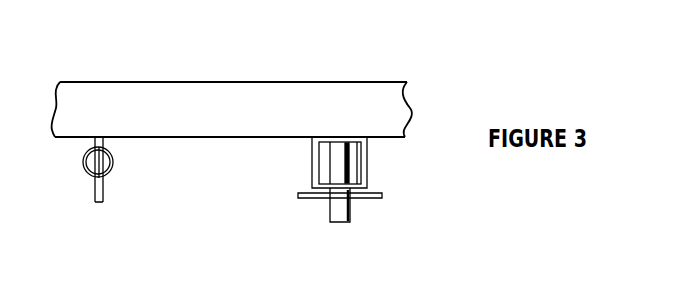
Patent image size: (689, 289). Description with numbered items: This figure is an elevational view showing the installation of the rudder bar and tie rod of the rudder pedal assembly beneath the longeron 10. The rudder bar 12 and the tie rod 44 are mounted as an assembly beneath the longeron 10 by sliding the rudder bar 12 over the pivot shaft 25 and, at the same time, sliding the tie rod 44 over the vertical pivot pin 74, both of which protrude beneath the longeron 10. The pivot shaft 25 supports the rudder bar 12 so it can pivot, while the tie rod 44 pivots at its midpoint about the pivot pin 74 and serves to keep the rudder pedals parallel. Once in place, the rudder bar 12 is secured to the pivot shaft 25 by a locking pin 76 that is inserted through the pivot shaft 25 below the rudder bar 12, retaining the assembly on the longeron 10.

The longeron 10 is at (200, 82).
The rudder bar 12 is at (368, 164).
The pivot shaft 25 is at (352, 208).
The tie rod 44 is at (113, 166).
The pivot pin 74 is at (104, 190).
The locking pin 76 is at (383, 196).